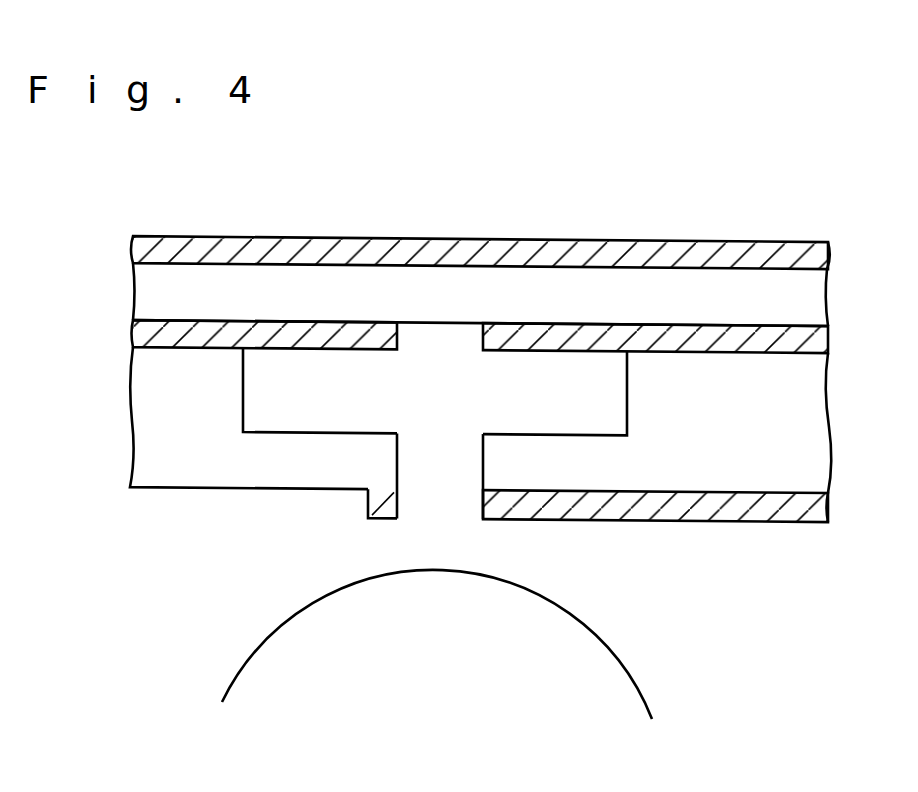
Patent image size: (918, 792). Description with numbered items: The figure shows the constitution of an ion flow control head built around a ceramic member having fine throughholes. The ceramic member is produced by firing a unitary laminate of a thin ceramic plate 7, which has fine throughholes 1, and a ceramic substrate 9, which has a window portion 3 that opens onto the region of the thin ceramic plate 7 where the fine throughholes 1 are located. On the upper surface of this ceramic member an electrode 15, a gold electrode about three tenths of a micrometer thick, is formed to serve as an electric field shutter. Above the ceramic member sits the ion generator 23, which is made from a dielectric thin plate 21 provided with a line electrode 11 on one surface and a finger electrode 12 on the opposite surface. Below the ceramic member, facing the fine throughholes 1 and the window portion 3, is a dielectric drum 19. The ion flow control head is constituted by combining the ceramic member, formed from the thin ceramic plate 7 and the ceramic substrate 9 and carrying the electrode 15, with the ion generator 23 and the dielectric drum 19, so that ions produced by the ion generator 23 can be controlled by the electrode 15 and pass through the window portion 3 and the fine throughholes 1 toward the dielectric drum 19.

The fine throughholes 1 is at (463, 500).
The window portion 3 is at (478, 405).
The thin ceramic plate 7 is at (113, 427).
The ceramic substrate 9 is at (838, 360).
The line electrode 11 is at (643, 242).
The finger electrode 12 is at (820, 342).
The electrode 15 is at (702, 522).
The dielectric drum 19 is at (632, 677).
The dielectric thin plate 21 is at (817, 295).
The ion generator 23 is at (466, 277).